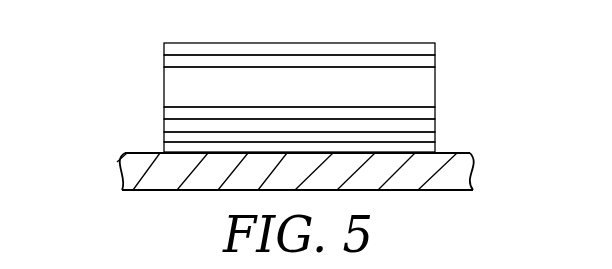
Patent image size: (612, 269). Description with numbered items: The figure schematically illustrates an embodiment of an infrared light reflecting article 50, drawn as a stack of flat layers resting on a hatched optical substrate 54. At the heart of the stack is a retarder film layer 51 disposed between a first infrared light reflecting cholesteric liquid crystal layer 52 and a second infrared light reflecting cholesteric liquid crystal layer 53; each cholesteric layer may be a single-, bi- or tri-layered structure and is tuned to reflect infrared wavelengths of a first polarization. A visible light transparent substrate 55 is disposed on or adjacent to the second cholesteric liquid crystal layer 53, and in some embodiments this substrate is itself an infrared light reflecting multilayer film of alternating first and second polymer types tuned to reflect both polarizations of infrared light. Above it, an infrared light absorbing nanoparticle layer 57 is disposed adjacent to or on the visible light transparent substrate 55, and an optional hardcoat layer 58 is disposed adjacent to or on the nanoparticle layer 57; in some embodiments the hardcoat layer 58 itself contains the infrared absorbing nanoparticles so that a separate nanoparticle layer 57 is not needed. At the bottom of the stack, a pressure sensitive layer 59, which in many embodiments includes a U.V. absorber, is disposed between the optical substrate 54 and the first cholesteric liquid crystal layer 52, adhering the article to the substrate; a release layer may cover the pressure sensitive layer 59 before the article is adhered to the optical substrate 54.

The infrared light reflecting article 50 is at (294, 95).
The retarder film layer 51 is at (425, 122).
The first infrared light reflecting cholesteric liquid crystal layer 52 is at (170, 137).
The second infrared light reflecting cholesteric liquid crystal layer 53 is at (170, 113).
The optical substrate 54 is at (133, 168).
The visible light transparent substrate 55 is at (423, 75).
The infrared light absorbing nanoparticle layer 57 is at (172, 58).
The hardcoat layer 58 is at (377, 48).
The pressure sensitive layer 59 is at (437, 150).